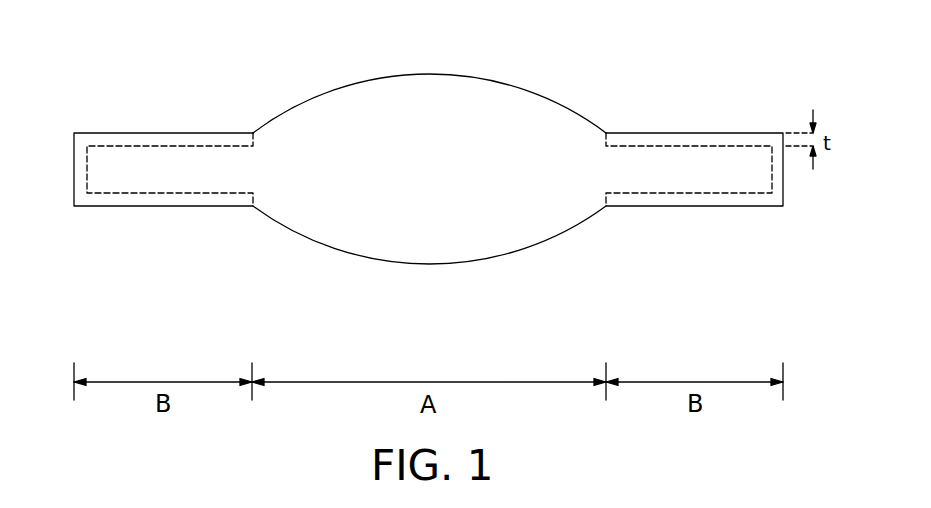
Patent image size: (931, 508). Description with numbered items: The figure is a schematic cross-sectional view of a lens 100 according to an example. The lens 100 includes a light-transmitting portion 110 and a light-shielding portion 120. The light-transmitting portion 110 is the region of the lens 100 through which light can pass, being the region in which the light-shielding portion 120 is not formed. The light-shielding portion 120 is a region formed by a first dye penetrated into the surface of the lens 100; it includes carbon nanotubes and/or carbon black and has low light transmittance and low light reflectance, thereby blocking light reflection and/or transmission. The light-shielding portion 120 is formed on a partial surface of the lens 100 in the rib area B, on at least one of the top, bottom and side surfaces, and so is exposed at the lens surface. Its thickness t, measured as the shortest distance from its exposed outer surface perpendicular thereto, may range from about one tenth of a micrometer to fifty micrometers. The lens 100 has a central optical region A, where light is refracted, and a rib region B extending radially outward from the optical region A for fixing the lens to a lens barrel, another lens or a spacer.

The lens 100 is at (540, 26).
The light-transmitting portion 110 is at (536, 233).
The light-shielding portion 120 is at (700, 196).